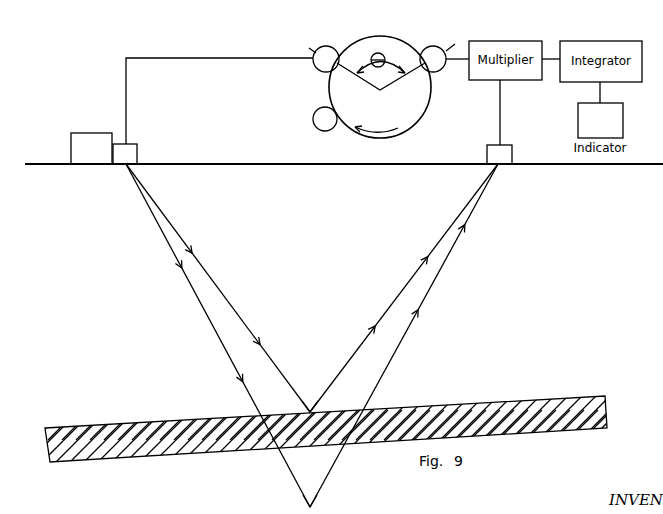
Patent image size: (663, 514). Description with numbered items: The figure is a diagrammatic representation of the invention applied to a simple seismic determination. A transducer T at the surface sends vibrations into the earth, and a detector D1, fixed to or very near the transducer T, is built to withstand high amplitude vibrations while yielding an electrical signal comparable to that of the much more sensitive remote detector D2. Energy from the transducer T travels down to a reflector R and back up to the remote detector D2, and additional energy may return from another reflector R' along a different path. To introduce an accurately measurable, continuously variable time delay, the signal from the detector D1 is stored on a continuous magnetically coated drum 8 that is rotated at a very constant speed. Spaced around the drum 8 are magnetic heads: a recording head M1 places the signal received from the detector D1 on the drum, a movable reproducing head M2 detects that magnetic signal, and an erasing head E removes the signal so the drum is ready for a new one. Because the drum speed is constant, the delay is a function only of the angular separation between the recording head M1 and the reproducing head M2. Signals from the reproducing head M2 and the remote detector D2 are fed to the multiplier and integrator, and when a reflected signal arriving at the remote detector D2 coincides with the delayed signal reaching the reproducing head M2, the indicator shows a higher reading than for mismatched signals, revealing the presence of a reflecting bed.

The magnetic drum 8 is at (398, 43).
The transducer T is at (91, 148).
The detector D1 is at (125, 154).
The remote detector D2 is at (499, 154).
The recording head M1 is at (324, 59).
The movable reproducing head M2 is at (437, 58).
The erasing head E is at (325, 119).
The reflector R is at (316, 405).
The other reflector R' is at (319, 498).